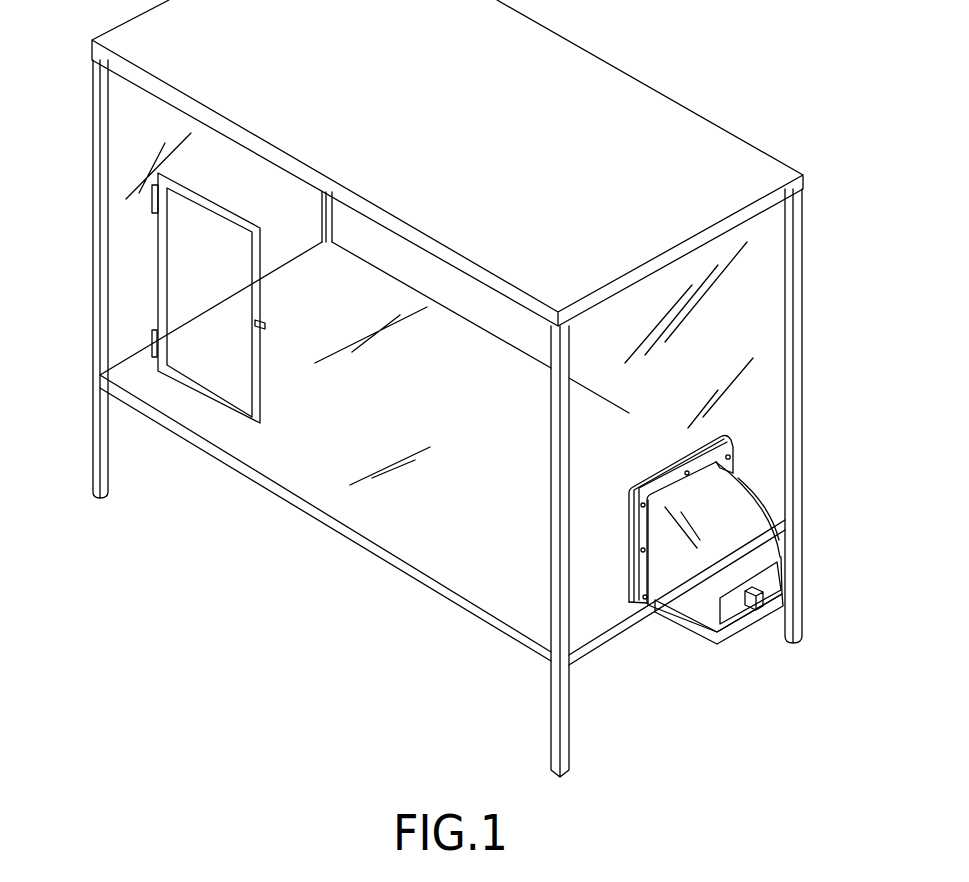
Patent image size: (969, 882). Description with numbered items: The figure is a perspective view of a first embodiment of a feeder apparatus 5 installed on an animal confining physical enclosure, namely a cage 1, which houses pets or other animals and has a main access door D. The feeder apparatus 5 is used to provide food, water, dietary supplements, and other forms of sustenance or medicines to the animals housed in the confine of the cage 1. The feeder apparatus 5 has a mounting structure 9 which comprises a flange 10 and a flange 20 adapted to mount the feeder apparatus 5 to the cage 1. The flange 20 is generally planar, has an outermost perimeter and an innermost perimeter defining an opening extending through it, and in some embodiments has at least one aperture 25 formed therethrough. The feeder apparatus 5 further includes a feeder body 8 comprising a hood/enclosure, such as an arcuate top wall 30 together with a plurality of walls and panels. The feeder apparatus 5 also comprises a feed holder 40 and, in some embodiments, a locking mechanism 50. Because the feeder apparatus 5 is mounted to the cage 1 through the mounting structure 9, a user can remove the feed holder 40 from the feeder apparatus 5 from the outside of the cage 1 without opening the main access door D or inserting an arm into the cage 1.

The cage 1 is at (302, 449).
The main access door D is at (198, 278).
The feeder apparatus 5 is at (770, 577).
The feeder body 8 is at (730, 495).
The mounting structure 9 is at (622, 583).
The flange 10 is at (628, 603).
The flange 20 is at (646, 562).
The aperture 25 is at (731, 457).
The arcuate top wall 30 is at (748, 540).
The feed holder 40 is at (703, 642).
The locking mechanism 50 is at (753, 612).